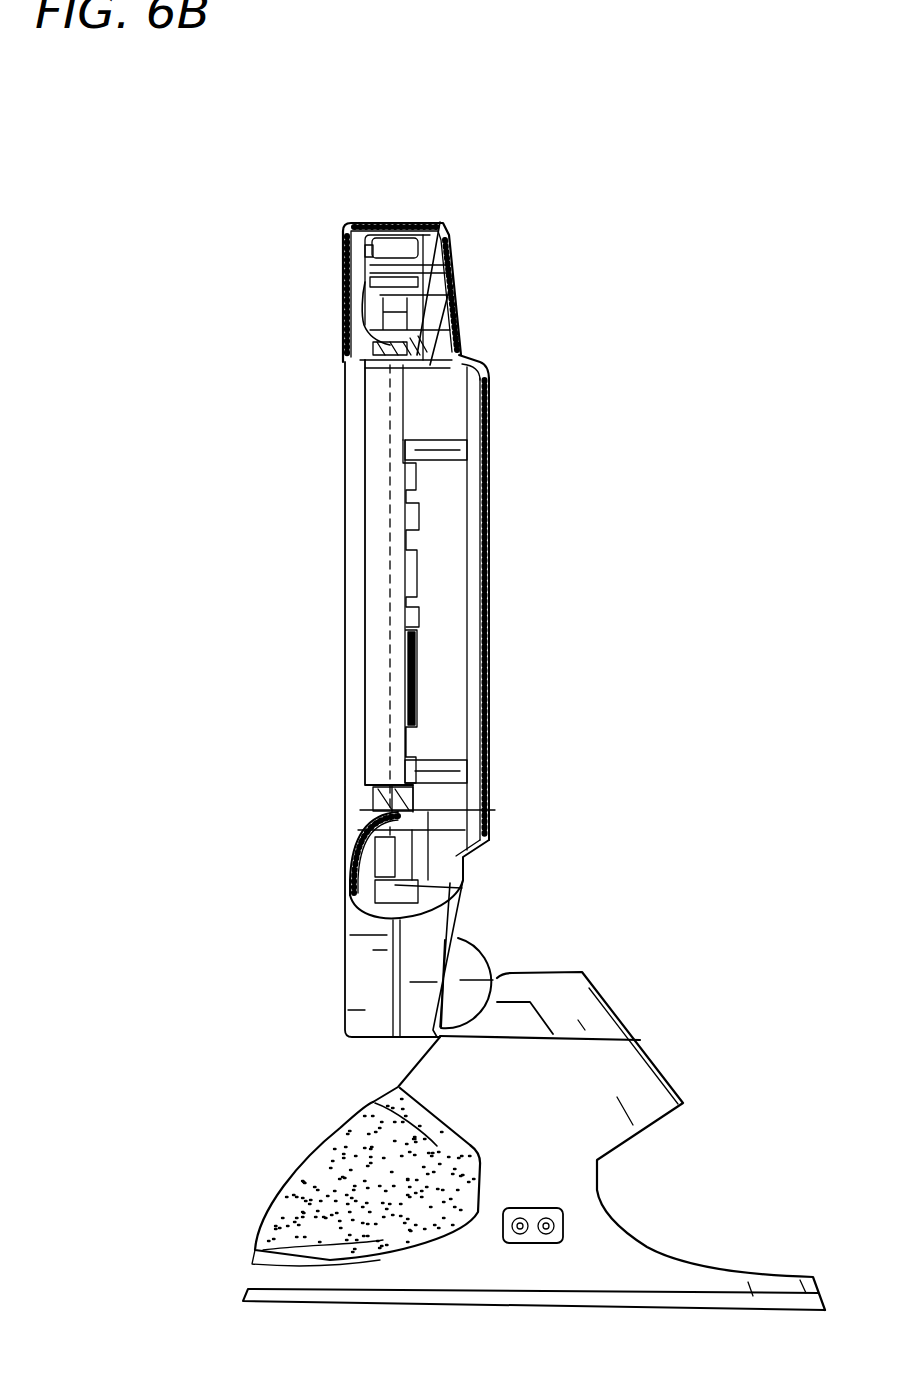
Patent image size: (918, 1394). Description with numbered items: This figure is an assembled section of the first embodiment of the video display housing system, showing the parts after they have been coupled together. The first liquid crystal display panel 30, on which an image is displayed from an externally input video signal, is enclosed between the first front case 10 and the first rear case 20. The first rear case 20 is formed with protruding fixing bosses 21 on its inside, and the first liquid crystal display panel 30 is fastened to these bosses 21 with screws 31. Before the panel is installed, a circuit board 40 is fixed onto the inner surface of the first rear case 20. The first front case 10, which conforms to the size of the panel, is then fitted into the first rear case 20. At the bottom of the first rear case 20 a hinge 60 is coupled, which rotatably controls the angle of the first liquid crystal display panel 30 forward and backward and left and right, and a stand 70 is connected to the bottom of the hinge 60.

The first front case 10 is at (343, 244).
The first rear case 20 is at (487, 617).
The fixing bosses 21 is at (453, 275).
The first liquid crystal display panel 30 is at (365, 548).
The screws 31 is at (365, 283).
The circuit board 40 is at (405, 670).
The hinge 60 is at (597, 990).
The stand 70 is at (337, 1133).